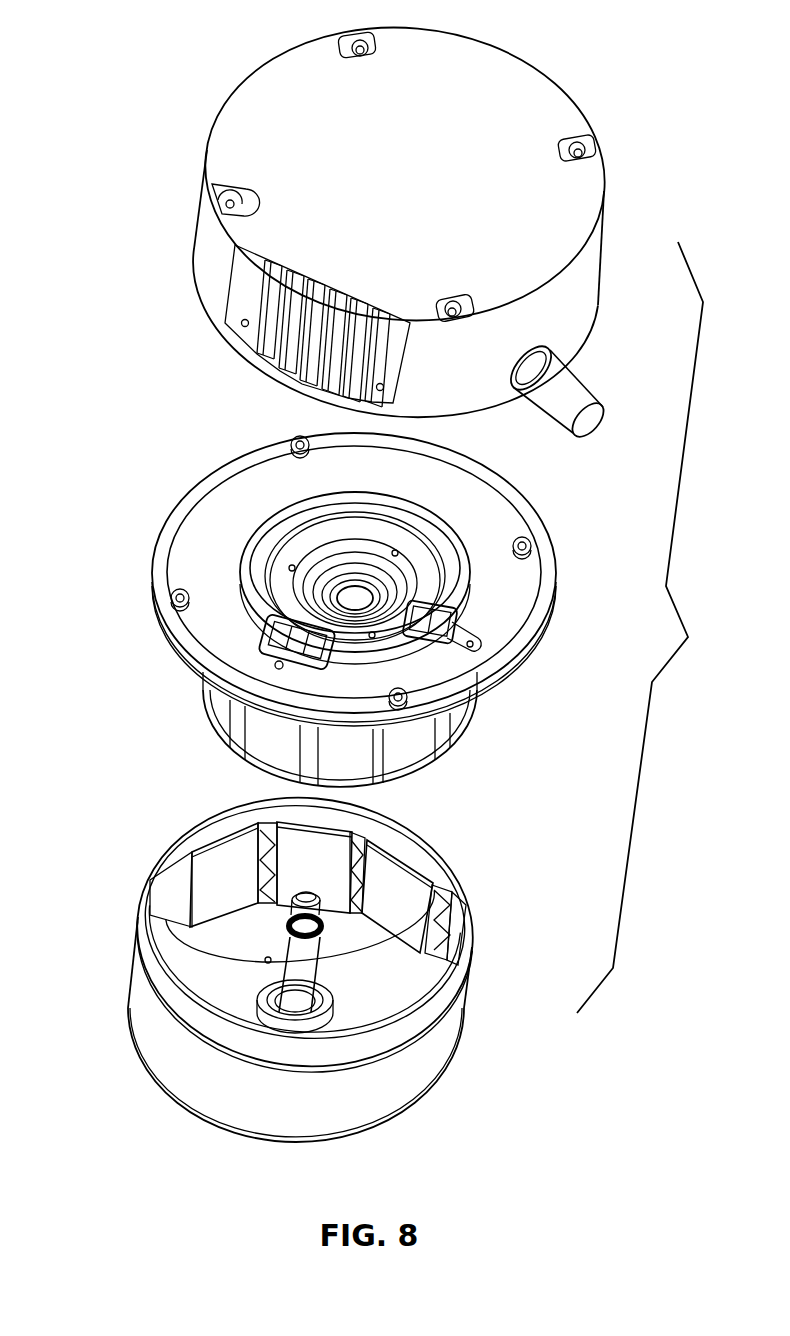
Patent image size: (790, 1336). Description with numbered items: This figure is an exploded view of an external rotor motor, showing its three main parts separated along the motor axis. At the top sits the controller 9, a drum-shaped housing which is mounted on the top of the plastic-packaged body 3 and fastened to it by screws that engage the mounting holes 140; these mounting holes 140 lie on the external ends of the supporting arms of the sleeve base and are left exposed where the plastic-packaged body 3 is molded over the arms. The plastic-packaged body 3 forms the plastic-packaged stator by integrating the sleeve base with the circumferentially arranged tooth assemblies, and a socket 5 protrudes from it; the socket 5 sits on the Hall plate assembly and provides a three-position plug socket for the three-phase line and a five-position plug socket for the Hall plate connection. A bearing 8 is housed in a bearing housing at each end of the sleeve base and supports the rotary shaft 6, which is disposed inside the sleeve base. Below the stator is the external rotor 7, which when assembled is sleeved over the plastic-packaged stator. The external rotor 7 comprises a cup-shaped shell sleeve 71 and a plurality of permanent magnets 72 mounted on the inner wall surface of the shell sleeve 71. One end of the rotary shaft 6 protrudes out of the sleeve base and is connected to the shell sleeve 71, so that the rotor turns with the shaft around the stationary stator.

The controller 9 is at (298, 138).
The plastic-packaged body 3 is at (220, 535).
The mounting holes 140 is at (173, 593).
The bearing 8 is at (380, 600).
The socket 5 is at (472, 637).
The external rotor 7 is at (483, 935).
The shell sleeve 71 is at (248, 1092).
The permanent magnets 72 is at (230, 883).
The rotary shaft 6 is at (297, 973).